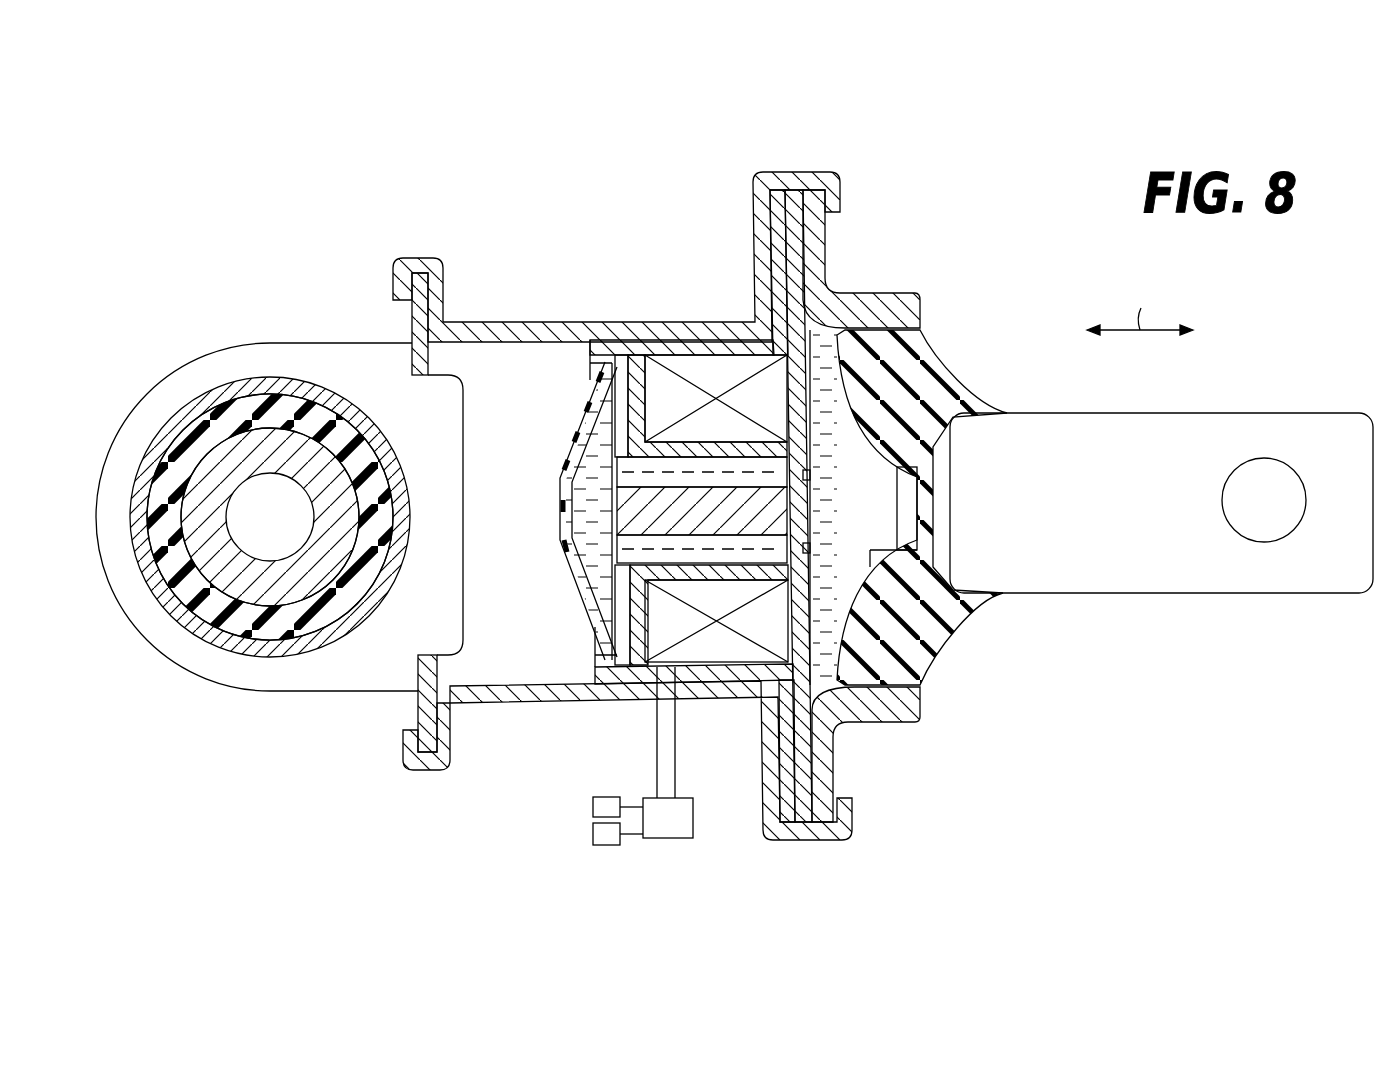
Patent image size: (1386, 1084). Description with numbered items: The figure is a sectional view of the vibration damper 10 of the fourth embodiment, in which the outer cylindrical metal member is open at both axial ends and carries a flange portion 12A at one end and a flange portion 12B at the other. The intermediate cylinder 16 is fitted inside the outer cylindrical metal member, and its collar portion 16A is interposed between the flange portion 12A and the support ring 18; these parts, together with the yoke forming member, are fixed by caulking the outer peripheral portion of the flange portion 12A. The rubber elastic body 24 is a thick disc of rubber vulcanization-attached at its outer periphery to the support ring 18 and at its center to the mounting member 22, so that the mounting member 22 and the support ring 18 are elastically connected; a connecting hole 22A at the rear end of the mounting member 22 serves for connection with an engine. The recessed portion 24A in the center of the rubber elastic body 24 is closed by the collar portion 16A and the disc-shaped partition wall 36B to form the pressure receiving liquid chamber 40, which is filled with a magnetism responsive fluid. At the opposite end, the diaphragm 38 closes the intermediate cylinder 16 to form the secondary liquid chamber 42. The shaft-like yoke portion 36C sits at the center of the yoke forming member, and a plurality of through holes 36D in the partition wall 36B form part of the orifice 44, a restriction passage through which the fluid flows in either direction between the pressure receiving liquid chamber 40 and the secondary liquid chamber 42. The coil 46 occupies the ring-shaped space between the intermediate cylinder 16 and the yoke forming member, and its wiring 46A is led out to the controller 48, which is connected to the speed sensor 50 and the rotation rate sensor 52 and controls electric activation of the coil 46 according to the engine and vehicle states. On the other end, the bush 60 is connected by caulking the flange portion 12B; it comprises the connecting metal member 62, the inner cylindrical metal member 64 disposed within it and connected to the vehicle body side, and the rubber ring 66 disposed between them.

The vibration damper 10 is at (927, 185).
The flange portion 12A is at (597, 321).
The flange portion 12B is at (443, 300).
The intermediate cylinder 16 is at (687, 337).
The collar portion 16A is at (755, 232).
The support ring 18 is at (826, 254).
The mounting member 22 is at (1133, 413).
The connecting hole 22A is at (1263, 462).
The rubber elastic body 24 is at (947, 372).
The recessed portion 24A is at (903, 548).
The partition wall 36B is at (826, 228).
The yoke portion 36C is at (600, 500).
The through holes 36D is at (806, 477).
The diaphragm 38 is at (575, 553).
The pressure receiving liquid chamber 40 is at (918, 507).
The secondary liquid chamber 42 is at (582, 520).
The orifice 44 is at (703, 470).
The coil 46 is at (712, 648).
The wiring 46A is at (675, 767).
The controller 48 is at (666, 840).
The speed sensor 50 is at (593, 808).
The rotation rate sensor 52 is at (593, 835).
The bush 60 is at (300, 305).
The connecting metal member 62 is at (331, 362).
The inner cylindrical metal member 64 is at (263, 440).
The rubber ring 66 is at (220, 430).